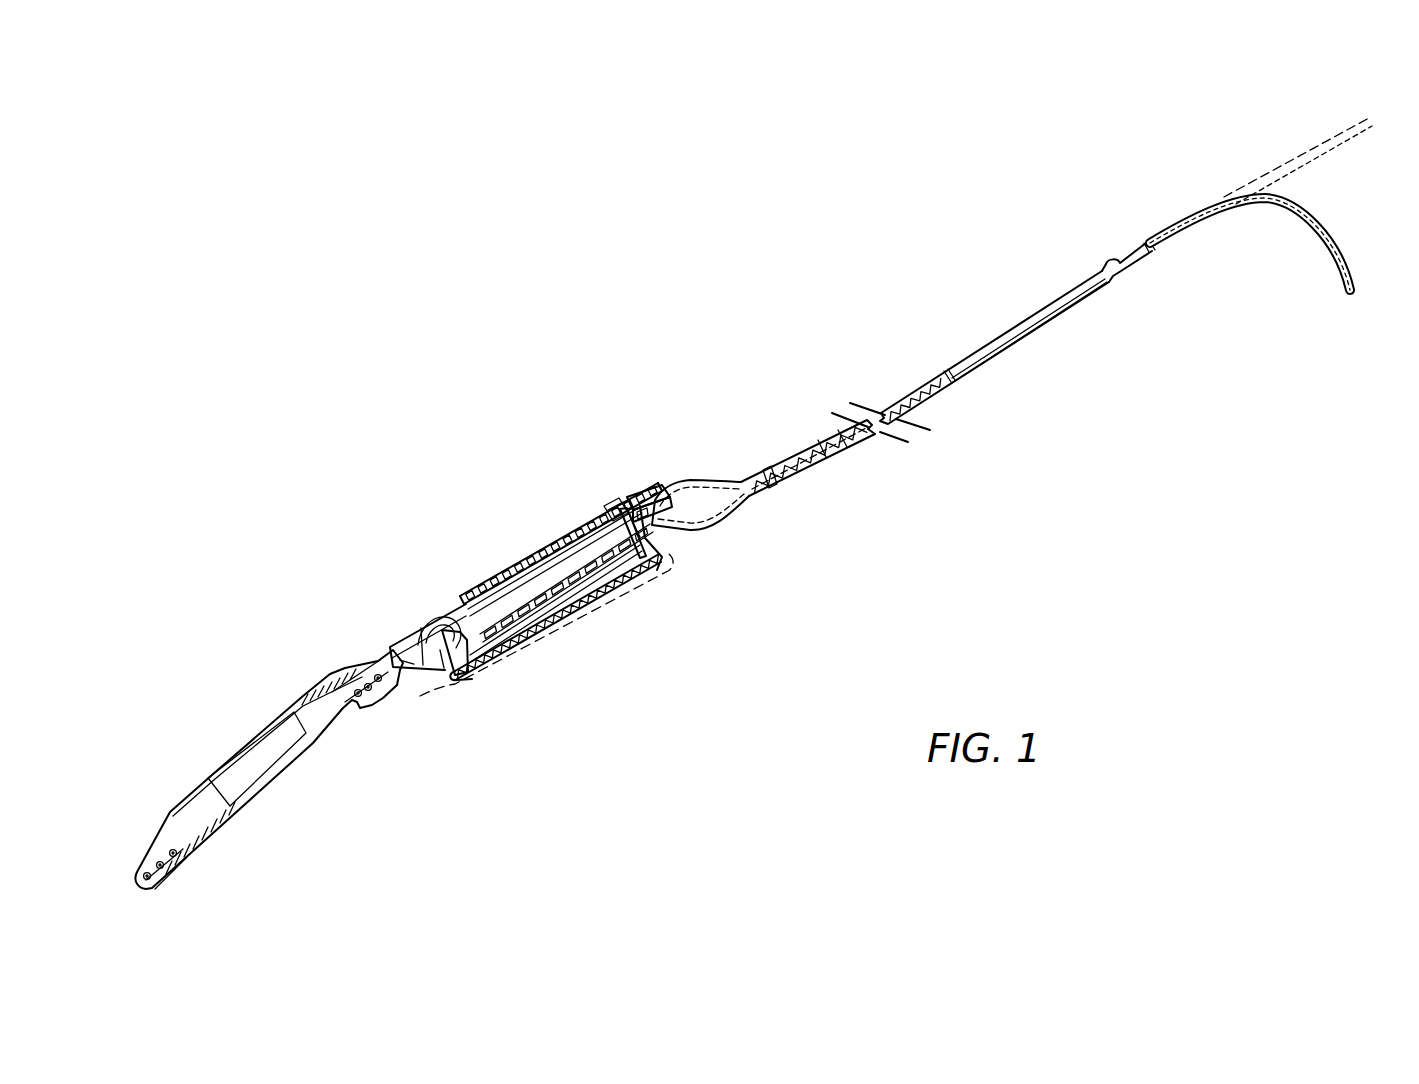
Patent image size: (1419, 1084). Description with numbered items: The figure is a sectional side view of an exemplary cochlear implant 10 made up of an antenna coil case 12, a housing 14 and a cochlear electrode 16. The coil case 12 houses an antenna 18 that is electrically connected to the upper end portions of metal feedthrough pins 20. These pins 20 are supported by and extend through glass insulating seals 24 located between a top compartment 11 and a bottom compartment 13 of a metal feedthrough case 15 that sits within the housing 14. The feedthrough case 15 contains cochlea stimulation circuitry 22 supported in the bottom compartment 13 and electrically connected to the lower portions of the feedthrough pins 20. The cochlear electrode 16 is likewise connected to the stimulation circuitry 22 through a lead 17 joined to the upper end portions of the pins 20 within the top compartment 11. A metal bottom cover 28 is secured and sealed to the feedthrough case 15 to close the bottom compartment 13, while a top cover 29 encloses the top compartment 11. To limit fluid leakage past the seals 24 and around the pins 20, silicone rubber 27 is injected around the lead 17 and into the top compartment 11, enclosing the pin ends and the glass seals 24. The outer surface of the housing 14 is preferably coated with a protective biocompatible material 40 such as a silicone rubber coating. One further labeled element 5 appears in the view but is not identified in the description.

The cochlear implant 10 is at (279, 469).
The antenna coil case 12 is at (239, 726).
The antenna 18 is at (170, 883).
The housing 14 is at (502, 546).
The metal feedthrough case 15 is at (557, 546).
The cochlea stimulation circuitry 22 is at (454, 680).
The cartridge assembly 5 is at (509, 681).
The bottom compartment 13 is at (615, 579).
The metal bottom cover 28 is at (478, 682).
The protective biocompatible material 40 is at (583, 621).
The silicone rubber 27 is at (615, 519).
The metal feedthrough pins 20 is at (622, 511).
The top compartment 11 is at (634, 508).
The top cover 29 is at (648, 495).
The glass insulating seals 24 is at (655, 530).
The lead 17 is at (786, 487).
The cochlear electrode 16 is at (1287, 252).